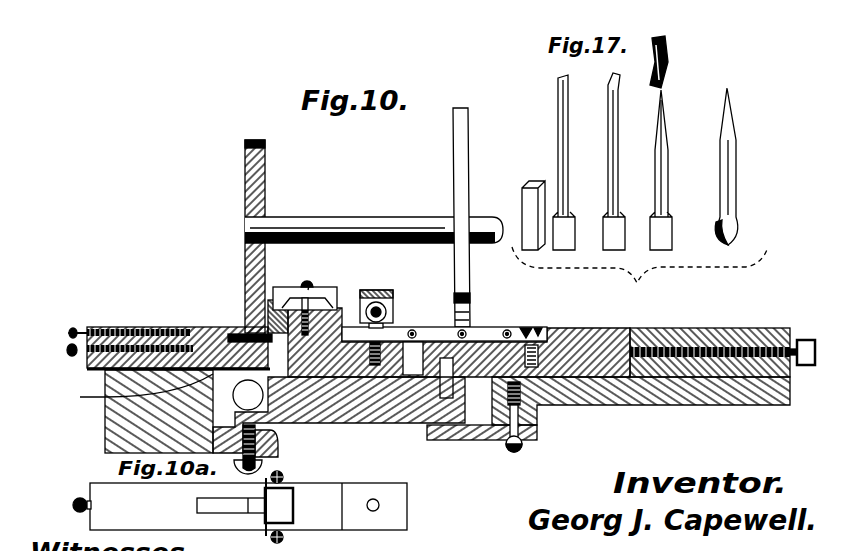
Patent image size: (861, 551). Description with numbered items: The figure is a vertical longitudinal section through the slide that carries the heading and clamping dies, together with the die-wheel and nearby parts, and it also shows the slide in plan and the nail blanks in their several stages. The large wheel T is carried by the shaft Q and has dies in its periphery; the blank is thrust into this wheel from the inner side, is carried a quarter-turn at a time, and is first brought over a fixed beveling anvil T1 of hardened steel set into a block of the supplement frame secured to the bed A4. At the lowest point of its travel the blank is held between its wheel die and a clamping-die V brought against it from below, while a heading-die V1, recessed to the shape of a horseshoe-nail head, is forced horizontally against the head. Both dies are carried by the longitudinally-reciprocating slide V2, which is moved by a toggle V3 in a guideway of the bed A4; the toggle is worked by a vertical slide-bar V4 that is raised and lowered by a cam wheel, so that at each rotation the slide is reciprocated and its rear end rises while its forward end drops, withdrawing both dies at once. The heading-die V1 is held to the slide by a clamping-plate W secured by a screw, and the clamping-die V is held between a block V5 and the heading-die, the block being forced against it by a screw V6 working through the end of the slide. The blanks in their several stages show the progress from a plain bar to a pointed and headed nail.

In FIG. 10, the wheel T is at (268, 236).
In FIG. 10, the shaft Q is at (374, 222).
In FIG. 10, the slide-bar V4 is at (470, 170).
In FIG. 10, the slide V2 is at (327, 433).
In FIG. 10a, the slide V2 is at (248, 506).
In FIG. 10, the screw V6 is at (292, 460).
In FIG. 10a, the screw V6 is at (80, 498).
In FIG. 10, the beveling anvil T1 is at (277, 305).
In FIG. 10, the clamping-die V is at (228, 326).
In FIG. 10a, the clamping-die V is at (257, 513).
In FIG. 10, the block V5 is at (380, 434).
In FIG. 10a, the block V5 is at (222, 513).
In FIG. 10, the toggle V3 is at (396, 329).
In FIG. 10, the heading-die V1 is at (337, 300).
In FIG. 10a, the heading-die V1 is at (279, 507).
In FIG. 10, the clamping-plate W is at (312, 289).
In FIG. 10, the pin Y is at (304, 278).
In FIG. 10, the bed A4 is at (621, 379).